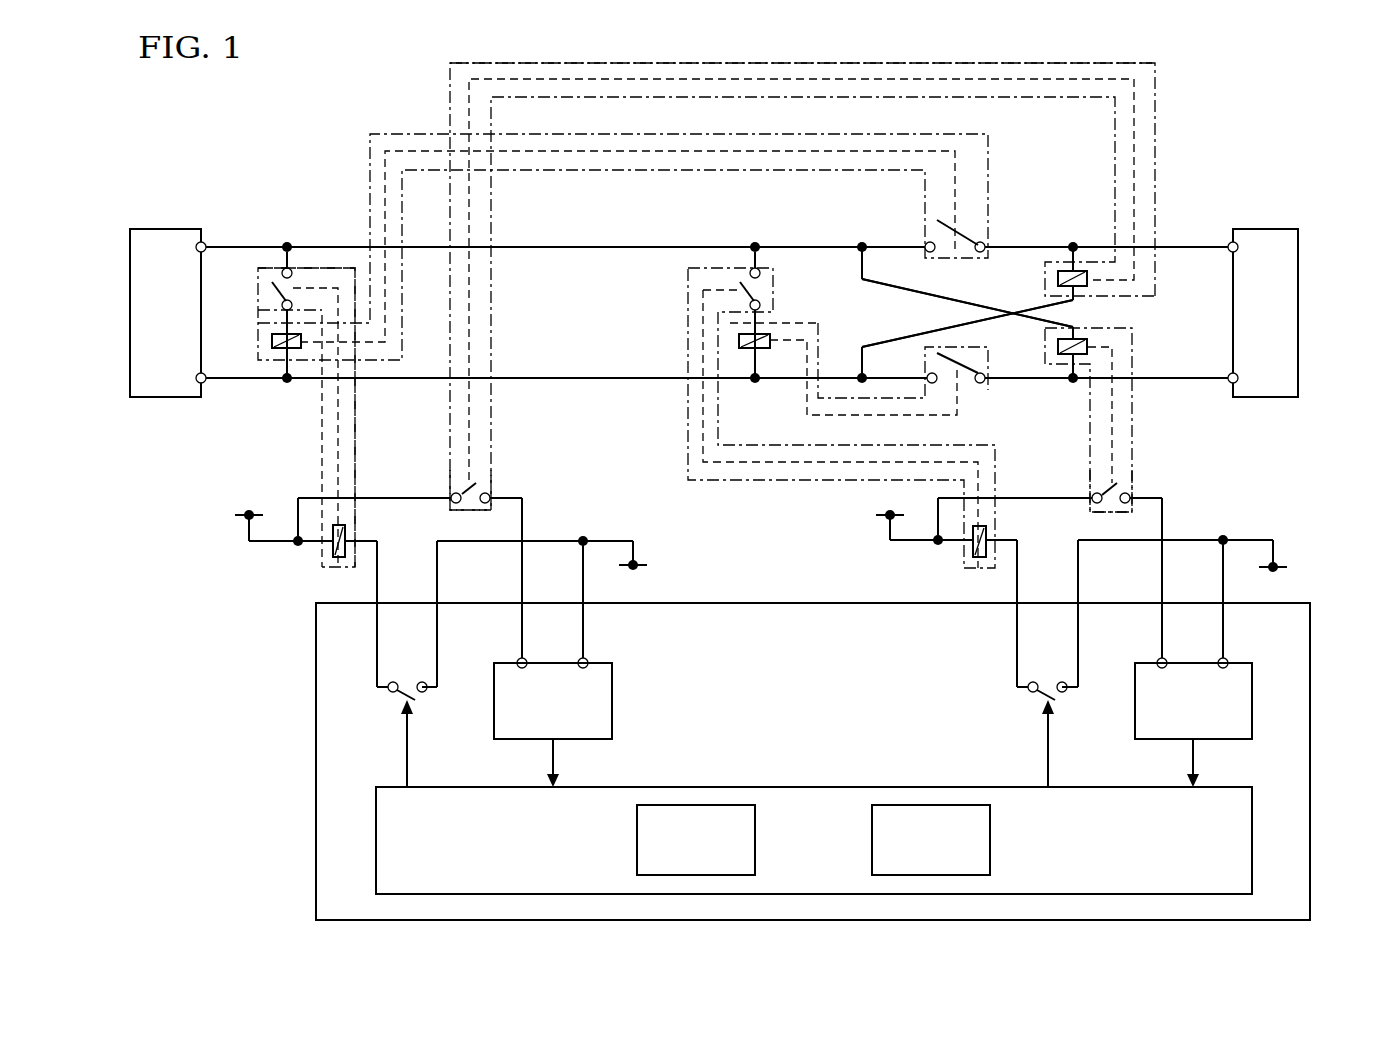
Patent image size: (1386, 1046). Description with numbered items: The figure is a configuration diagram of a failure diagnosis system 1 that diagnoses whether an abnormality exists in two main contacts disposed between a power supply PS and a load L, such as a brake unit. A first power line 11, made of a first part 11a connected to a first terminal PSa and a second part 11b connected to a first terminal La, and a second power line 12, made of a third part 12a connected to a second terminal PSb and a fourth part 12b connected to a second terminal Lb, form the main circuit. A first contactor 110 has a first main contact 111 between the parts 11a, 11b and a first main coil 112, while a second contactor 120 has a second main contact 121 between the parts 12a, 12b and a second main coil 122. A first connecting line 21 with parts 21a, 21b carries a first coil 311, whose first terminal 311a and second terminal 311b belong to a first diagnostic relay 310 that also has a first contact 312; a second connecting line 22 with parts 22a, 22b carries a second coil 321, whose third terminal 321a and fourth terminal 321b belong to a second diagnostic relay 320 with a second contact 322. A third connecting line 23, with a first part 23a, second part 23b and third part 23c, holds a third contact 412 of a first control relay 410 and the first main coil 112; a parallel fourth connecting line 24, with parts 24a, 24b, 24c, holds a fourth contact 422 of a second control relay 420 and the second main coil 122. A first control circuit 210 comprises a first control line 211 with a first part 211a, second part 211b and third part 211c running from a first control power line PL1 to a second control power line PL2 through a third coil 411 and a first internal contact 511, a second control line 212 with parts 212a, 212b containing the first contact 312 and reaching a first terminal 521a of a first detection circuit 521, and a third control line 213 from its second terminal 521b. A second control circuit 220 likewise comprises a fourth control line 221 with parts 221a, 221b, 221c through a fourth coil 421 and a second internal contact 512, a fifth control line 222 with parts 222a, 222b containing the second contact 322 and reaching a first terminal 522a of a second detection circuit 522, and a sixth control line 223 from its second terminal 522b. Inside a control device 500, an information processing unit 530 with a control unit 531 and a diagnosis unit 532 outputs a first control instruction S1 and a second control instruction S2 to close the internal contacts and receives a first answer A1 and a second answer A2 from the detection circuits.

The failure diagnosis system 1 is at (1222, 53).
The first power line 11 is at (596, 240).
The first part of first power line 11a is at (752, 245).
The second part of first power line 11b is at (1040, 245).
The second power line 12 is at (603, 390).
The third part of second power line 12a is at (640, 381).
The fourth part of second power line 12b is at (1071, 388).
The first connecting line 21 is at (999, 330).
The first part of first connecting line 21a is at (1076, 262).
The second part of first connecting line 21b is at (932, 330).
The second connecting line 22 is at (998, 280).
The first part of second connecting line 22a is at (905, 290).
The second part of second connecting line 22b is at (1078, 381).
The third connecting line 23 is at (278, 380).
The first part of third connecting line 23a is at (289, 262).
The second part of third connecting line 23b is at (280, 349).
The third part of third connecting line 23c is at (283, 306).
The fourth connecting line 24 is at (742, 374).
The first part of fourth connecting line 24a is at (757, 268).
The second part of fourth connecting line 24b is at (762, 374).
The third part of fourth connecting line 24c is at (746, 318).
The first contactor 110 is at (400, 133).
The first main contact 111 is at (962, 222).
The first main coil 112 is at (301, 347).
The second contactor 120 is at (818, 323).
The second main contact 121 is at (987, 393).
The second main coil 122 is at (740, 343).
The first control circuit 210 is at (756, 586).
The first control line 211 is at (243, 548).
The first part of first control line 211a is at (270, 545).
The second part of first control line 211b is at (378, 585).
The third part of first control line 211c is at (478, 545).
The second control line 212 is at (453, 485).
The first part of second control line 212a is at (372, 497).
The second part of second control line 212b is at (512, 497).
The third control line 213 is at (590, 582).
The second control circuit 220 is at (1114, 608).
The fourth control line 221 is at (1006, 660).
The first part of fourth control line 221a is at (910, 543).
The second part of fourth control line 221b is at (1015, 584).
The third part of fourth control line 221c is at (1125, 543).
The fifth control line 222 is at (1045, 510).
The first part of fifth control line 222a is at (1017, 497).
The second part of fifth control line 222b is at (1162, 518).
The sixth control line 223 is at (1275, 578).
The first diagnostic relay 310 is at (838, 62).
The first coil 311 is at (1090, 278).
The first terminal of first coil 311a is at (1078, 271).
The second terminal of first coil 311b is at (1080, 288).
The first contact 312 is at (473, 487).
The second diagnostic relay 320 is at (1140, 446).
The second coil 321 is at (1090, 344).
The third terminal of second coil 321a is at (1076, 331).
The fourth terminal of second coil 321b is at (1080, 353).
The second contact 322 is at (1124, 480).
The first control relay 410 is at (357, 412).
The third coil 411 is at (336, 557).
The third contact 412 is at (277, 292).
The second control relay 420 is at (786, 482).
The fourth coil 421 is at (985, 558).
The fourth contact 422 is at (740, 290).
The control device 500 is at (1311, 625).
The first internal contact 511 is at (400, 702).
The second internal contact 512 is at (1045, 702).
The first detection circuit 521 is at (613, 690).
The first terminal of first detection circuit 521a is at (520, 659).
The second terminal of first detection circuit 521b is at (588, 659).
The second detection circuit 522 is at (1268, 688).
The first terminal of second detection circuit 522a is at (1160, 659).
The second terminal of second detection circuit 522b is at (1226, 659).
The information processing unit 530 is at (822, 786).
The control unit 531 is at (756, 840).
The diagnosis unit 532 is at (991, 840).
The power supply PS is at (166, 229).
The first terminal of power supply PSa is at (202, 242).
The second terminal of power supply PSb is at (202, 384).
The load L is at (1275, 229).
The first terminal of load La is at (1233, 242).
The second terminal of load Lb is at (1233, 383).
The first control power line PL1 is at (243, 512).
The second control power line PL2 is at (637, 562).
The first control instruction S1 is at (404, 770).
The second control instruction S2 is at (1051, 768).
The first answer A1 is at (556, 755).
The second answer A2 is at (1196, 755).